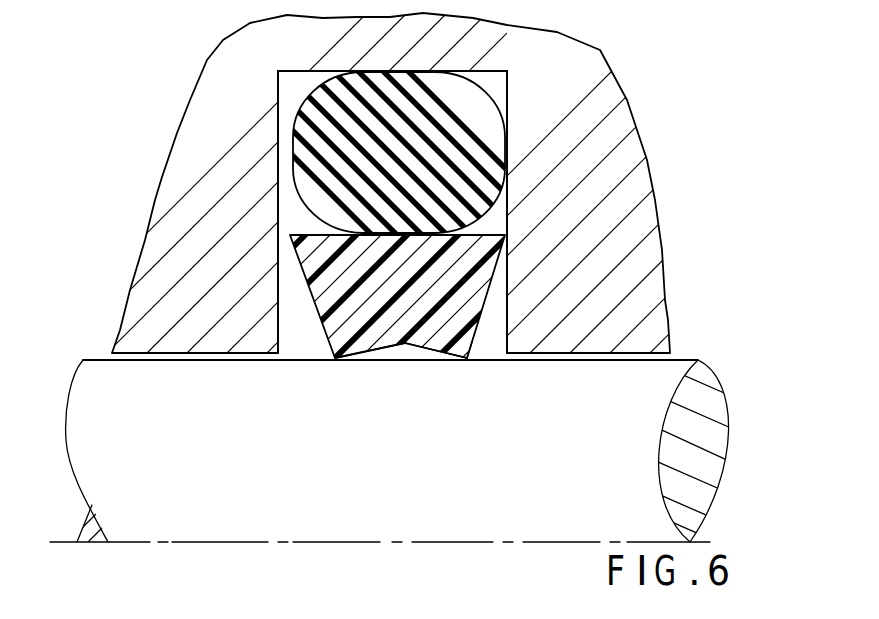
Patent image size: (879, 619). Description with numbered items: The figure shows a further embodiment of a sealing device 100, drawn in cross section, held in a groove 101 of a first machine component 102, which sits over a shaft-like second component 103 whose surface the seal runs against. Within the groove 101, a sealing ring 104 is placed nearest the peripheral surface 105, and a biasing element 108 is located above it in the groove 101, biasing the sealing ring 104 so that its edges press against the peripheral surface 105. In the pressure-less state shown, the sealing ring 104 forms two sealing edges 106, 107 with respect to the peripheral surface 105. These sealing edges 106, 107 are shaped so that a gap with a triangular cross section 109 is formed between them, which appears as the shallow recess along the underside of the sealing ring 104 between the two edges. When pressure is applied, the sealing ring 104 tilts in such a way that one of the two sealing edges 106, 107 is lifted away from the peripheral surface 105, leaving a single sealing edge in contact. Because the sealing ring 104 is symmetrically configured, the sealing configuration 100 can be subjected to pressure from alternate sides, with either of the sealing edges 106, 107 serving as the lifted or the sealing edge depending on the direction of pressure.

The sealing device 100 is at (449, 250).
The groove 101 is at (290, 90).
The first machine component 102 is at (600, 178).
The shaft 103 is at (590, 473).
The sealing ring 104 is at (322, 258).
The peripheral surface 105 is at (98, 357).
The sealing edge 106 is at (337, 358).
The sealing edge 107 is at (468, 358).
The biasing element 108 is at (473, 113).
The gap with a triangular cross section 109 is at (402, 352).